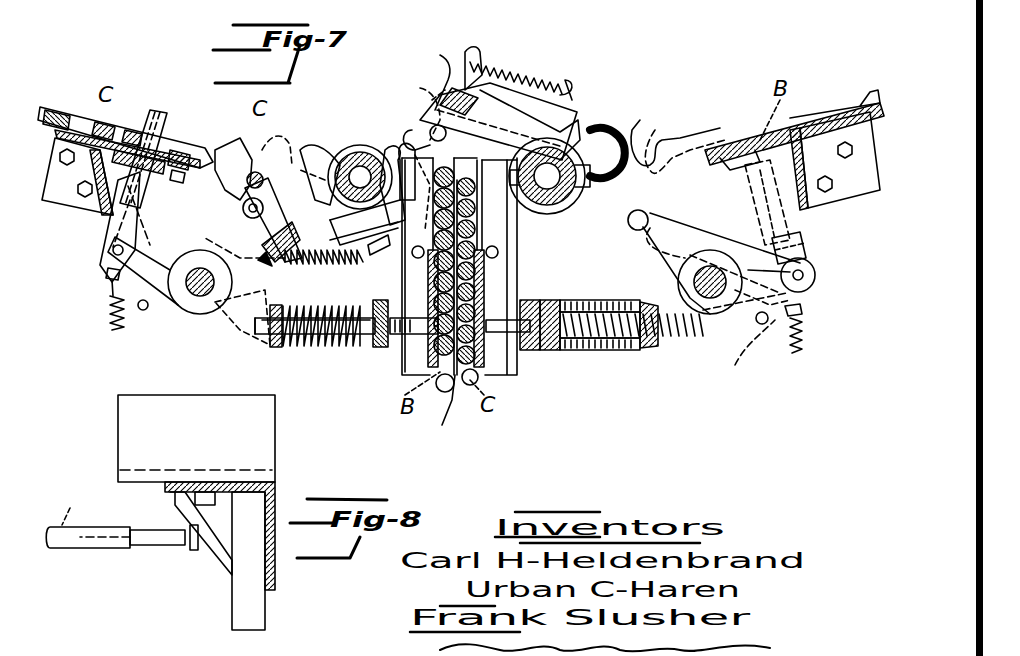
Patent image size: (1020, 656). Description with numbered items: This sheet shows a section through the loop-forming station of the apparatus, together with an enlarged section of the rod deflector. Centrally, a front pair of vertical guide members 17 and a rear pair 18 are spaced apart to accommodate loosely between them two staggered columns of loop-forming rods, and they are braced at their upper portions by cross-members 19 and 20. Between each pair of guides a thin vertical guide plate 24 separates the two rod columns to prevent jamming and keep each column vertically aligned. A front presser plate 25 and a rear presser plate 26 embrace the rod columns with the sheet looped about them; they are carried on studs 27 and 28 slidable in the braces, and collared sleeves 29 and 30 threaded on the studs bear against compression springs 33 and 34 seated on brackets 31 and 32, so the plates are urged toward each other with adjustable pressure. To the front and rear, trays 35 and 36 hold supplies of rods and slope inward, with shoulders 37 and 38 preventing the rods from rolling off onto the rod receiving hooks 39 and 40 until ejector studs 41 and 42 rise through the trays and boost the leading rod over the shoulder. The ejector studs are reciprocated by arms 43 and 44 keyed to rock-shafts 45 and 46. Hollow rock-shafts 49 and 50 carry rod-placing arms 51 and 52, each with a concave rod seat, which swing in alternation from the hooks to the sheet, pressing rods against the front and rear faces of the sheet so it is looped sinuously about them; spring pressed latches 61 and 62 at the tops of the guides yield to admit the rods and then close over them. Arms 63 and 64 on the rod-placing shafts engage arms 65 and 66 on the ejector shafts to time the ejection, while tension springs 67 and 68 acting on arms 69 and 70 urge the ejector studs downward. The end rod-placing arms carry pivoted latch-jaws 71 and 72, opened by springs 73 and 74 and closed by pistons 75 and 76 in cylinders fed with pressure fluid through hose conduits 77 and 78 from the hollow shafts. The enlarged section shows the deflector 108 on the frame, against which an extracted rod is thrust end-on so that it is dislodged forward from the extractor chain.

In FIG. 7, the front vertical guide member 17 is at (510, 360).
In FIG. 7, the rear vertical guide member 18 is at (430, 350).
In FIG. 7, the cross-member 19 is at (525, 345).
In FIG. 7, the cross-member 20 is at (410, 340).
In FIG. 7, the vertical guide plate 24 is at (440, 412).
In FIG. 7, the front presser plate 25 is at (484, 340).
In FIG. 7, the rear presser plate 26 is at (440, 352).
In FIG. 7, the stud 27 is at (550, 300).
In FIG. 7, the stud 28 is at (430, 325).
In FIG. 7, the collared sleeve 29 is at (645, 345).
In FIG. 7, the collared sleeve 30 is at (275, 325).
In FIG. 7, the bracket 31 is at (645, 350).
In FIG. 7, the bracket 32 is at (372, 335).
In FIG. 7, the compression spring 33 is at (612, 352).
In FIG. 7, the compression spring 34 is at (310, 348).
In FIG. 7, the front tray 35 is at (865, 105).
In FIG. 7, the rear tray 36 is at (52, 108).
In FIG. 7, the shoulder 37 is at (728, 148).
In FIG. 7, the shoulder 38 is at (178, 125).
In FIG. 7, the rod receiving hook 39 is at (645, 120).
In FIG. 7, the rod receiving hook 40 is at (288, 135).
In FIG. 7, the ejector stud 41 is at (768, 200).
In FIG. 7, the ejector stud 42 is at (148, 108).
In FIG. 7, the arm 43 is at (805, 245).
In FIG. 7, the arm 44 is at (148, 196).
In FIG. 7, the rock-shaft 45 is at (710, 292).
In FIG. 7, the rock-shaft 46 is at (198, 296).
In FIG. 7, the rock-shaft 49 is at (585, 190).
In FIG. 7, the rock-shaft 50 is at (348, 146).
In FIG. 7, the rod-placing arm 51 is at (545, 85).
In FIG. 7, the rod-placing arm 52 is at (325, 148).
In FIG. 7, the spring pressed latch 61 is at (465, 165).
In FIG. 7, the spring pressed latch 62 is at (395, 150).
In FIG. 7, the arm 63 is at (480, 100).
In FIG. 7, the arm 64 is at (258, 240).
In FIG. 7, the arm 65 is at (635, 225).
In FIG. 7, the arm 66 is at (248, 300).
In FIG. 7, the tension spring 67 is at (800, 340).
In FIG. 7, the tension spring 68 is at (110, 304).
In FIG. 7, the arm 69 is at (737, 348).
In FIG. 7, the arm 70 is at (108, 274).
In FIG. 7, the latch-jaw 71 is at (421, 108).
In FIG. 7, the latch-jaw 72 is at (225, 152).
In FIG. 7, the spring 73 is at (508, 80).
In FIG. 7, the spring 74 is at (356, 262).
In FIG. 7, the piston 75 is at (440, 58).
In FIG. 7, the piston 76 is at (262, 254).
In FIG. 7, the hose conduit 77 is at (603, 128).
In FIG. 7, the hose conduit 78 is at (432, 128).
In FIG. 8, the deflector 108 is at (215, 555).